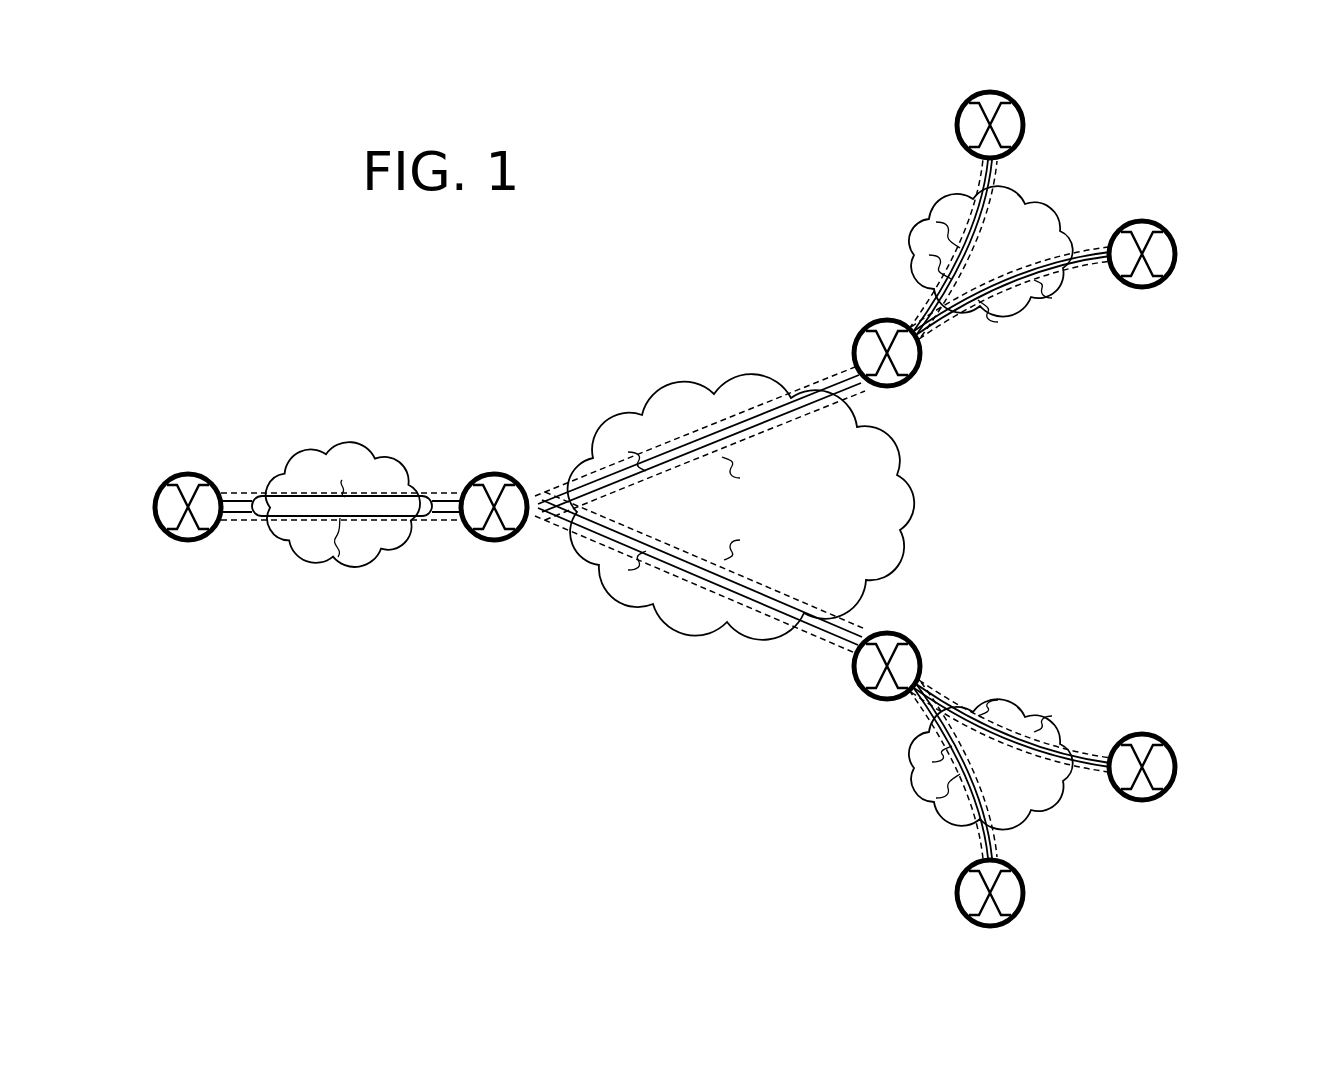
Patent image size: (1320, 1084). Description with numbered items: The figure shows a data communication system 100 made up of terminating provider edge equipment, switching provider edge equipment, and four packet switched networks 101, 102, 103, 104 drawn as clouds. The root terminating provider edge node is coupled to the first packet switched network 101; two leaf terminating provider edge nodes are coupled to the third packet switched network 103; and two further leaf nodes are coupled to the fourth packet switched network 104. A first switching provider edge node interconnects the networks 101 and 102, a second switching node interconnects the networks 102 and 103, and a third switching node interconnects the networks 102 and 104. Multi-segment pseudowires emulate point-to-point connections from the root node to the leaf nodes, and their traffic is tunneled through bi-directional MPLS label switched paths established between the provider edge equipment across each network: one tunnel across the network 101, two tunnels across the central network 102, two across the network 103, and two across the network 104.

The data communication system 100 is at (438, 802).
The packet switched network 101 is at (339, 437).
The packet switched network 102 is at (648, 391).
The packet switched network 103 is at (1034, 196).
The packet switched network 104 is at (1034, 826).